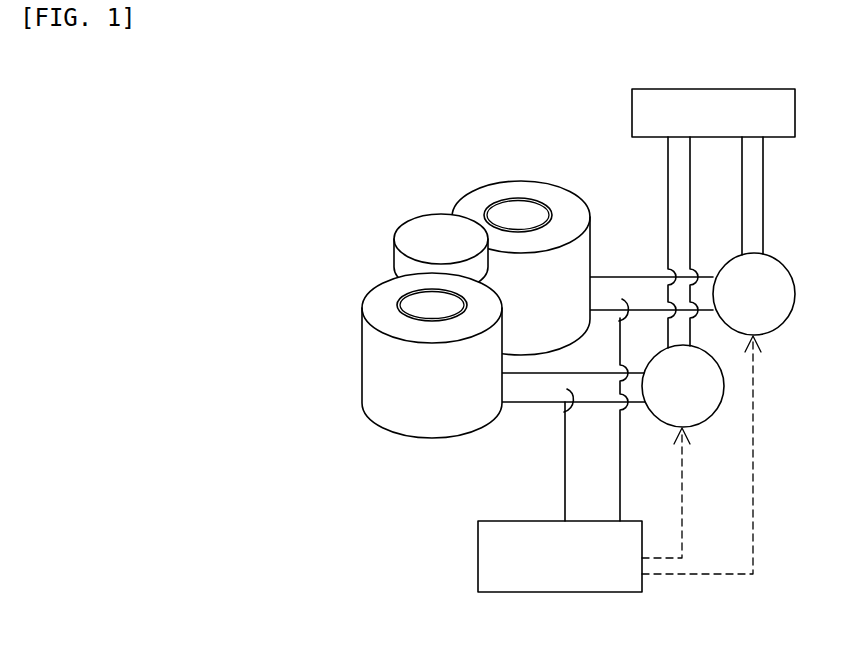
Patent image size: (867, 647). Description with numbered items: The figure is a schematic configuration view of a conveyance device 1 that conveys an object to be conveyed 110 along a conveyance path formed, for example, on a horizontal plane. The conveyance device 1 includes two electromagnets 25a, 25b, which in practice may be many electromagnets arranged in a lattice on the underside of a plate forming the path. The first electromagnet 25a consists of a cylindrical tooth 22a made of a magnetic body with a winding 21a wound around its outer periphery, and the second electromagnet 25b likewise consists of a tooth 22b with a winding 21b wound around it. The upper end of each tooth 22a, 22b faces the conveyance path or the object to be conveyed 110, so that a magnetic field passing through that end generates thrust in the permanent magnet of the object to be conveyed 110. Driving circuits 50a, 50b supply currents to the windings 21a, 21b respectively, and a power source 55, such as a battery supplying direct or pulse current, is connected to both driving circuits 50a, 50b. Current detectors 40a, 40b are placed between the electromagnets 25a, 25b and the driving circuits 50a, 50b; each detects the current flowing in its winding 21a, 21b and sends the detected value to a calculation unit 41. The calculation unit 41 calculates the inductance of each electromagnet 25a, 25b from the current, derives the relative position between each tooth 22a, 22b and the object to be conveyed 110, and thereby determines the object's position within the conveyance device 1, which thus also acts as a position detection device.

The conveyance device 1 is at (288, 176).
The object to be conveyed 110 is at (410, 230).
The winding 21a is at (373, 300).
The tooth 22a is at (423, 307).
The electromagnet 25a is at (357, 355).
The winding 21b is at (493, 195).
The tooth 22b is at (520, 179).
The electromagnet 25b is at (519, 216).
The current detector 40a is at (564, 412).
The current detector 40b is at (622, 299).
The calculation unit 41 is at (478, 555).
The driving circuit 50a is at (699, 430).
The driving circuit 50b is at (776, 328).
The power source 55 is at (748, 89).